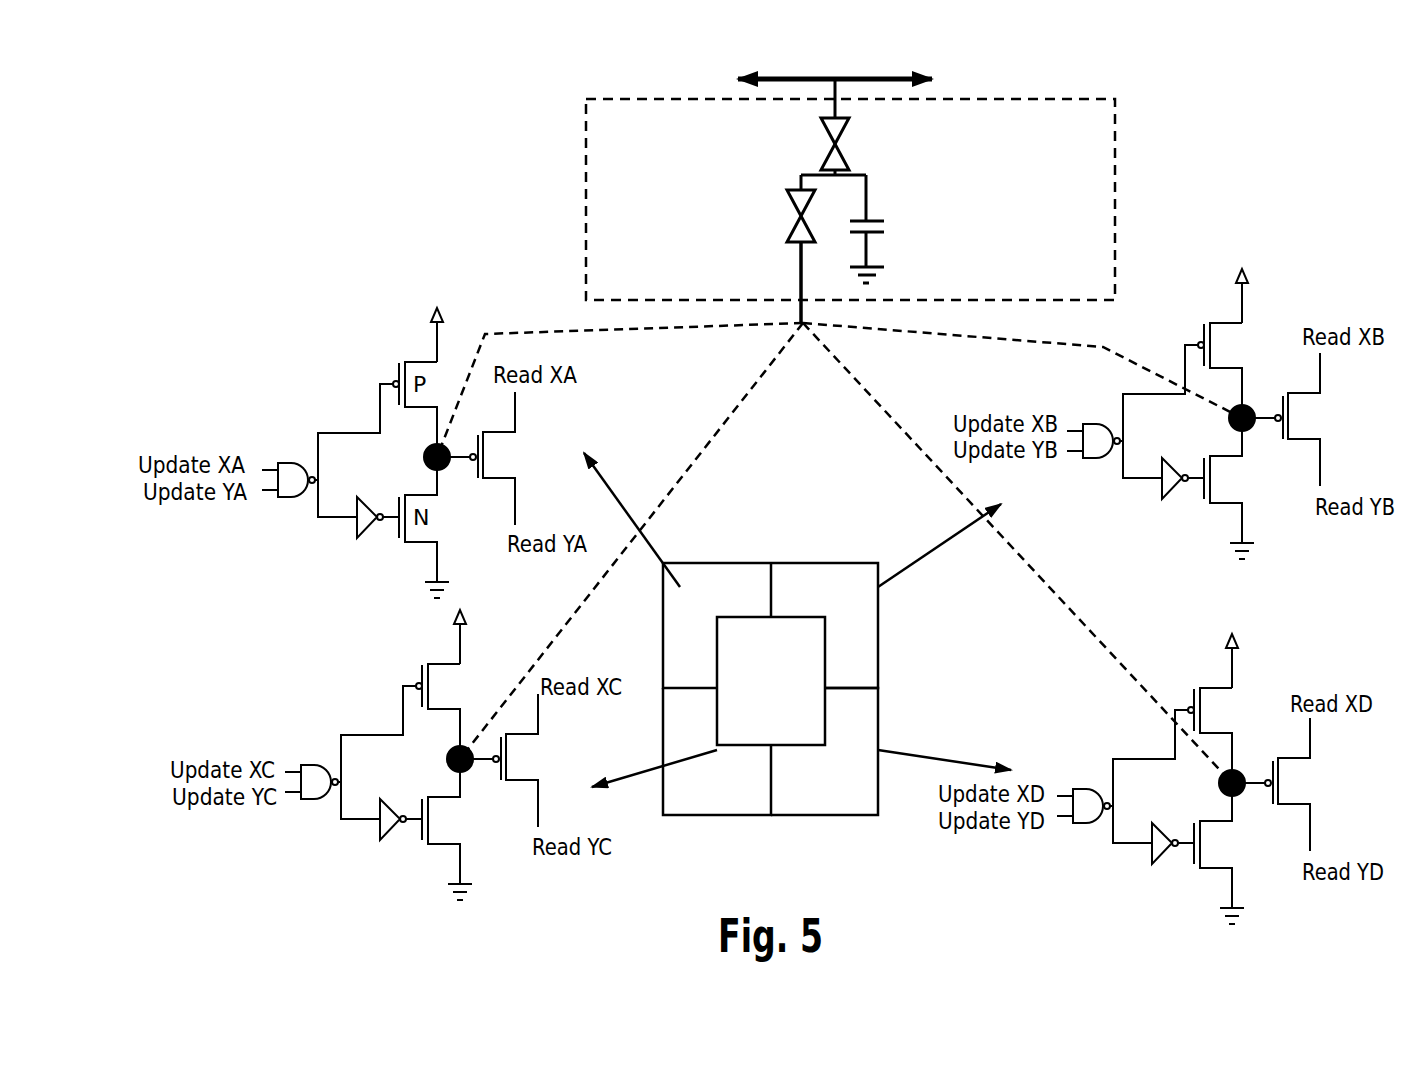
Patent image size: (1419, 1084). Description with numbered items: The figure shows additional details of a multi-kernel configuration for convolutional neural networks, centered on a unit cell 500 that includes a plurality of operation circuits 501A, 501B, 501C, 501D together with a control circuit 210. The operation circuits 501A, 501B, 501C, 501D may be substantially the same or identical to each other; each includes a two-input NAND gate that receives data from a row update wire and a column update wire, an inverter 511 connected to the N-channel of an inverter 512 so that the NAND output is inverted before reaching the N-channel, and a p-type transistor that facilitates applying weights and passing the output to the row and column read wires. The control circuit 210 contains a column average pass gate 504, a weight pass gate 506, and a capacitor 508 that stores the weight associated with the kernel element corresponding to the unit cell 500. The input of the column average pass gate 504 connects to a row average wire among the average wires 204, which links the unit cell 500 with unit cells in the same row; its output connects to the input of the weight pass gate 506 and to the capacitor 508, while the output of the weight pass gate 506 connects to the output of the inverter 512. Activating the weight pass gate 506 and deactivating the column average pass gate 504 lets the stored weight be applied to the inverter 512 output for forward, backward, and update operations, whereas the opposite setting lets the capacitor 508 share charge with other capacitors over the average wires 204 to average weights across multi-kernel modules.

The average wires 204 is at (918, 74).
The control circuit 210 is at (1115, 170).
The column average pass gate 504 is at (848, 158).
The weight pass gate 506 is at (783, 230).
The capacitor 508 is at (892, 221).
The unit cell 500 is at (797, 634).
The operation circuit 501A is at (717, 625).
The operation circuit 501B is at (824, 625).
The operation circuit 501C is at (717, 751).
The operation circuit 501D is at (824, 751).
The inverter 511 is at (319, 550).
The inverter 512 is at (421, 423).